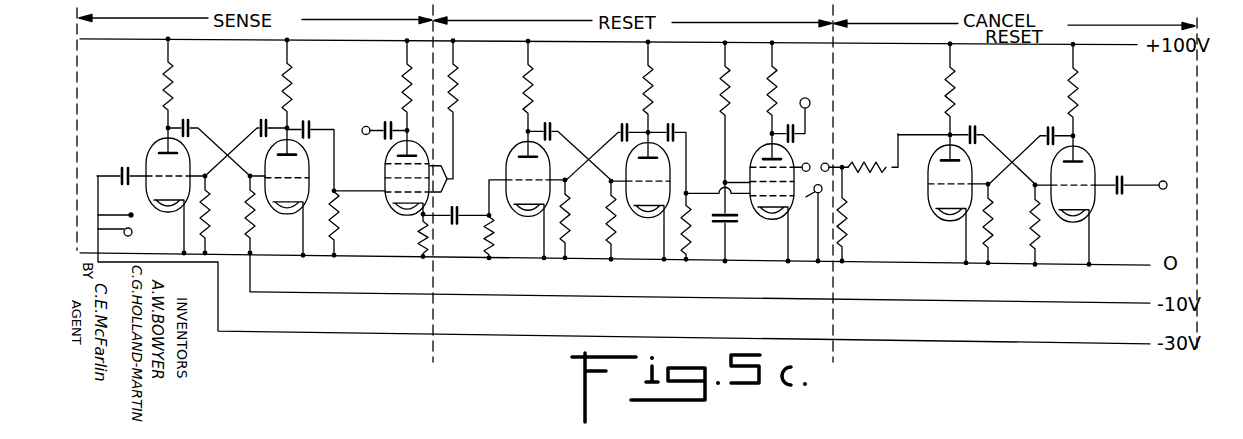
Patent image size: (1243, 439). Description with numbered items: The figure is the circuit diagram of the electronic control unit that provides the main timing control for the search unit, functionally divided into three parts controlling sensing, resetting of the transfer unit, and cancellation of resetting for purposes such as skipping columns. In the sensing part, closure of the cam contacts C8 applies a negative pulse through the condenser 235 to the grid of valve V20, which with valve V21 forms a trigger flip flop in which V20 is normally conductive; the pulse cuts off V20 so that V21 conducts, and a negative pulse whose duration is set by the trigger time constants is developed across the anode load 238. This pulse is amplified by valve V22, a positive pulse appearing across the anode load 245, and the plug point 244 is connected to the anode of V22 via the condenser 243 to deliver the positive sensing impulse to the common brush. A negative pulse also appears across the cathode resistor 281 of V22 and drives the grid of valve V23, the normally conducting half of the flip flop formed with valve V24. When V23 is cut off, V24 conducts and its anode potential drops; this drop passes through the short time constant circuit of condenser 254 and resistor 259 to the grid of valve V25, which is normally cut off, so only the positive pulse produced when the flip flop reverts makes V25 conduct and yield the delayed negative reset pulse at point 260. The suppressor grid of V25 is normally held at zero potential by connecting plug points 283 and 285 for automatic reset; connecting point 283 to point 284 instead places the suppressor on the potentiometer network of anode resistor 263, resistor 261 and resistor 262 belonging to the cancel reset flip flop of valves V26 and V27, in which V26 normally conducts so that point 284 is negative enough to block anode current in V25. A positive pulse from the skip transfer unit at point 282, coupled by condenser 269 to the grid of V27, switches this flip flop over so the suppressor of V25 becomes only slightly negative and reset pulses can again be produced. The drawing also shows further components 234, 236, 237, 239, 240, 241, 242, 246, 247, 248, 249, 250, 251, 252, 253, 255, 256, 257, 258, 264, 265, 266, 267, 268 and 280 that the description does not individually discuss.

The anode load resistor 234 is at (166, 84).
The condenser 235 is at (121, 168).
The cross-coupling capacitor 236 is at (200, 113).
The cross-coupling capacitor 237 is at (264, 119).
The anode load 238 is at (291, 83).
The coupling capacitor 239 is at (318, 114).
The grid resistor 240 is at (207, 208).
The grid resistor 241 is at (252, 232).
The grid resistor 242 is at (336, 236).
The condenser 243 is at (366, 133).
The plug point 244 is at (386, 120).
The anode load 245 is at (400, 83).
The screen resistor 246 is at (457, 84).
The coupling capacitor 247 is at (468, 199).
The grid resistor 248 is at (490, 238).
The anode load resistor 249 is at (534, 84).
The cross-coupling capacitor 250 is at (556, 116).
The cross-coupling capacitor 251 is at (622, 122).
The grid resistor 252 is at (565, 238).
The grid resistor 253 is at (612, 238).
The condenser 254 is at (682, 117).
The grid resistor 255 is at (725, 83).
The anode load resistor 256 is at (775, 83).
The coupling capacitor 257 is at (798, 129).
The decoupling capacitor 258 is at (736, 215).
The resistor 259 is at (687, 238).
The point 260 is at (824, 102).
The resistor 261 is at (866, 168).
The resistor 262 is at (842, 236).
The anode resistor 263 is at (950, 83).
The cross-coupling capacitor 264 is at (983, 116).
The anode load resistor 265 is at (1076, 84).
The cross-coupling capacitor 266 is at (1046, 122).
The grid resistor 267 is at (988, 236).
The grid resistor 268 is at (1036, 236).
The condenser 269 is at (1122, 184).
The anode load resistor 280 is at (652, 84).
The cathode resistor 281 is at (428, 240).
The point 282 is at (1166, 180).
The plug point 283 is at (810, 156).
The plug point 284 is at (845, 156).
The plug point 285 is at (813, 224).
The valve V20 is at (162, 208).
The valve V21 is at (279, 214).
The valve V22 is at (397, 214).
The valve V23 is at (520, 216).
The valve V24 is at (640, 219).
The valve V25 is at (764, 219).
The valve V26 is at (940, 216).
The valve V27 is at (1062, 216).
The cam contacts C8 is at (133, 235).